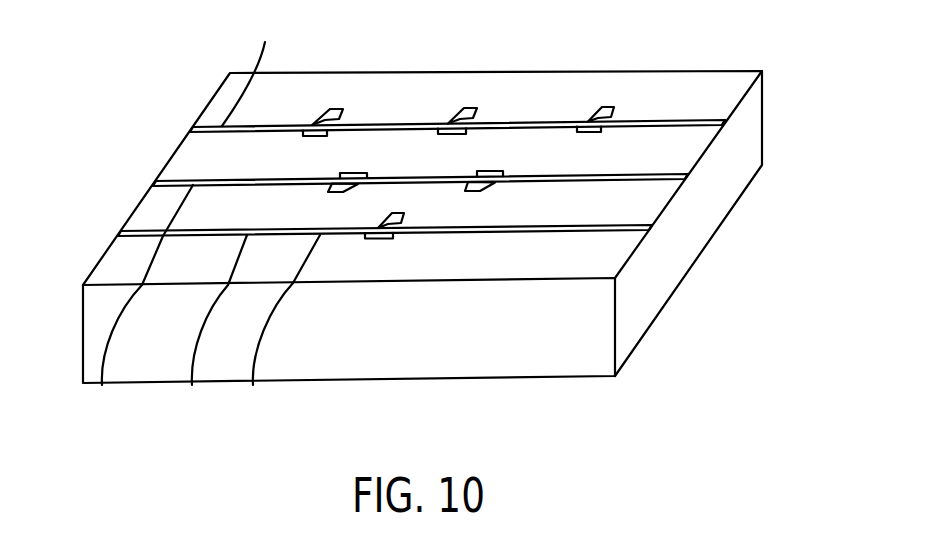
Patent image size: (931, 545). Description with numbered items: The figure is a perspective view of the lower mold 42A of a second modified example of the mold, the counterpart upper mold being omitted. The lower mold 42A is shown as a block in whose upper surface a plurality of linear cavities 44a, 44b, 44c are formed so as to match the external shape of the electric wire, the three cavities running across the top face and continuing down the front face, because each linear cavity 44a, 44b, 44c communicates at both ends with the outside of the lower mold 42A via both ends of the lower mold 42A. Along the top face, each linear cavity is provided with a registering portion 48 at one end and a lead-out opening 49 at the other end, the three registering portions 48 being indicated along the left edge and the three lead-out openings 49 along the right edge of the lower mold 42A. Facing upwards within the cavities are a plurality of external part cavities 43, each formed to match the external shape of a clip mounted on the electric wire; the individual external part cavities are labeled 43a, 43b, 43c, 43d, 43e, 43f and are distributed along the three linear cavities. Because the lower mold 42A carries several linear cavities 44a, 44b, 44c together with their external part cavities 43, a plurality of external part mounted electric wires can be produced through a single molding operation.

The lower mold 42A is at (630, 333).
The external part cavity 43 is at (337, 84).
The magnetic element tab 43a is at (347, 104).
The magnetic element 43b is at (472, 102).
The magnetic element 43c is at (610, 102).
The magnetic element 43d is at (484, 205).
The magnetic element trace 43e is at (253, 385).
The magnetic element 43f is at (378, 241).
The linear cavity 44a is at (251, 69).
The linear cavity 44b is at (102, 385).
The linear cavity 44c is at (192, 385).
The registering portion 48 is at (190, 128).
The lead-out opening 49 is at (731, 130).